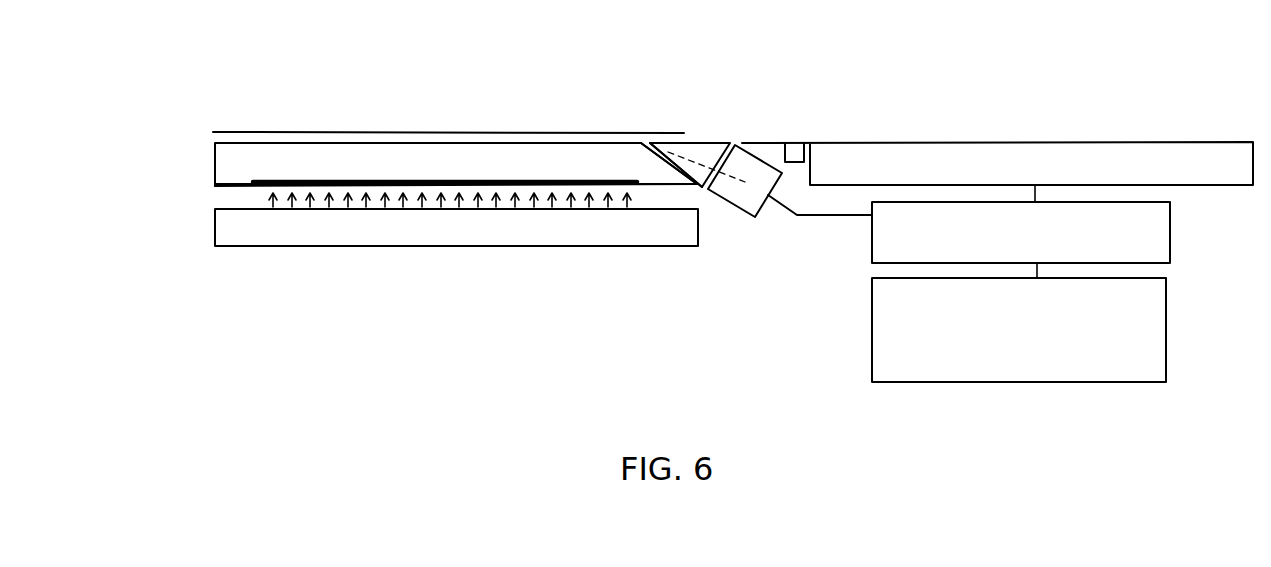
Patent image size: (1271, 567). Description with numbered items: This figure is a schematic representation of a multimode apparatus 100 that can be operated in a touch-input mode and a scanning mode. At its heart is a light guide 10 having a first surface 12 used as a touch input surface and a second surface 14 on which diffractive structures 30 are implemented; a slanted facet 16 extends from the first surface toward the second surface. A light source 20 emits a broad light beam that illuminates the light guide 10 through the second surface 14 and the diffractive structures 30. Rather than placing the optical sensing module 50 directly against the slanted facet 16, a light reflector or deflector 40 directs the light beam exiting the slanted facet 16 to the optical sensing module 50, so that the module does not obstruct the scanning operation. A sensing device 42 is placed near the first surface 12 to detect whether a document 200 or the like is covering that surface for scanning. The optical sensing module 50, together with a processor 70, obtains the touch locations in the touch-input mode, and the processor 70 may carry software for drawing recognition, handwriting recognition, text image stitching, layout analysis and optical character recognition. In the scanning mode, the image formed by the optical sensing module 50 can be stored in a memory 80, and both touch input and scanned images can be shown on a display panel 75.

The multimode apparatus 100 is at (894, 60).
The document 200 is at (452, 125).
The light guide 10 is at (223, 160).
The first surface 12 is at (404, 146).
The second surface 14 is at (219, 191).
The slanted facet 16 is at (652, 156).
The diffractive structures 30 is at (330, 178).
The light source 20 is at (237, 233).
The light reflector or deflector 40 is at (714, 140).
The sensing device 42 is at (797, 143).
The optical sensing module 50 is at (752, 219).
The display panel 75 is at (1036, 142).
The processor 70 is at (1170, 238).
The memory 80 is at (1166, 327).